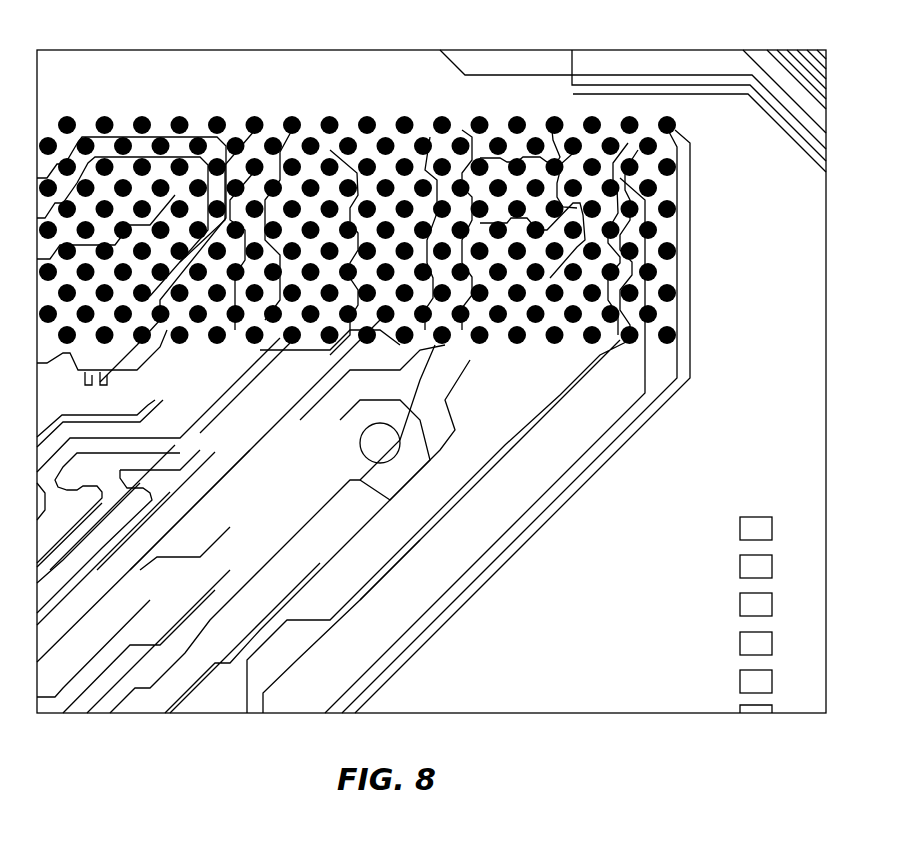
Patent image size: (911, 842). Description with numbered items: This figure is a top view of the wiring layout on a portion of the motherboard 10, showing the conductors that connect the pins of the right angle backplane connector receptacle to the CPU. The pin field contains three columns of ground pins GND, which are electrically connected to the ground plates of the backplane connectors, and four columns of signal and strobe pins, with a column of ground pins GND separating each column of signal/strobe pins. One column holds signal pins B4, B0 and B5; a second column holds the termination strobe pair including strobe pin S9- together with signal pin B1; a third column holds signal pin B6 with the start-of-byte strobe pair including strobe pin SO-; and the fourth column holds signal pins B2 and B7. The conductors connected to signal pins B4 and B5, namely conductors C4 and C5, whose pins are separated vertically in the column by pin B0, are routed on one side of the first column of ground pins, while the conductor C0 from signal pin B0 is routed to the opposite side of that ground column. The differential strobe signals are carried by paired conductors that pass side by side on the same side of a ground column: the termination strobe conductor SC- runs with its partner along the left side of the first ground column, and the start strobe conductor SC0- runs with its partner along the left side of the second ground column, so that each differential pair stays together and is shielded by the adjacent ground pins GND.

The motherboard 10 is at (691, 667).
The signal pin B2 is at (548, 121).
The signal pin B5 is at (560, 150).
The signal pin B6 is at (592, 120).
The ground pins GND is at (612, 118).
The strobe pin S9- is at (628, 122).
The signal pin B7 is at (545, 210).
The strobe pin S0- SO- is at (558, 200).
The signal pin B4 is at (672, 126).
The signal pin B0 is at (658, 168).
The signal pin B1 is at (673, 212).
The conductor C4 is at (692, 317).
The conductor C5 is at (692, 350).
The conductor C0 is at (643, 397).
The strobe conductor CS9- SC- is at (448, 520).
The strobe conductor CS0- SC0- is at (380, 550).